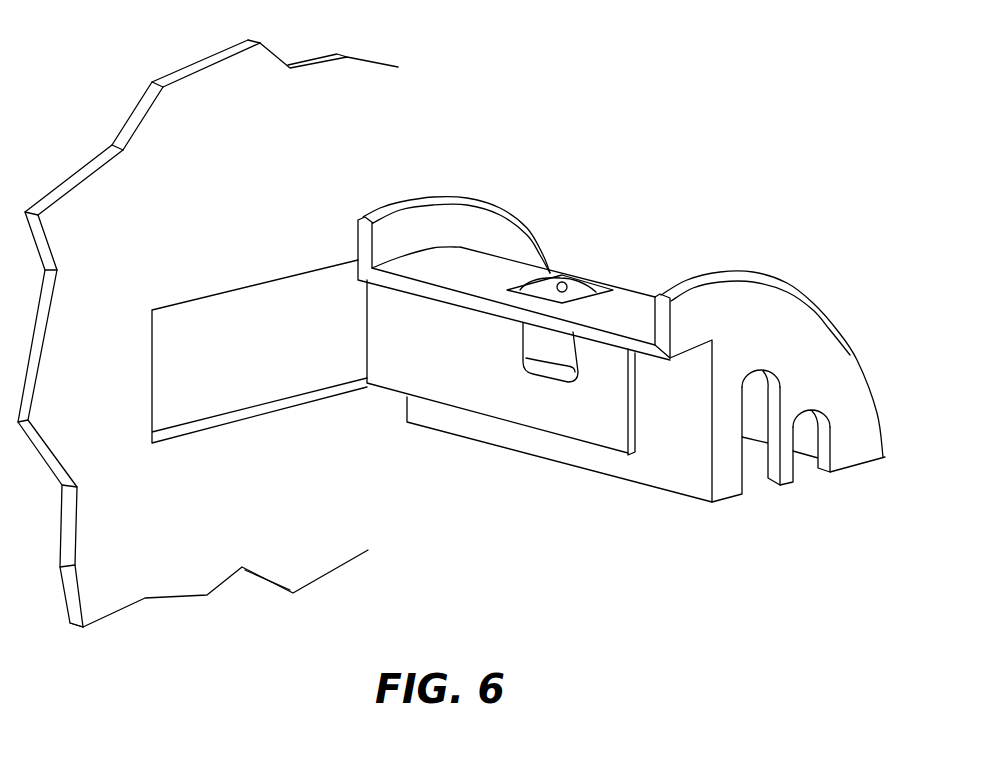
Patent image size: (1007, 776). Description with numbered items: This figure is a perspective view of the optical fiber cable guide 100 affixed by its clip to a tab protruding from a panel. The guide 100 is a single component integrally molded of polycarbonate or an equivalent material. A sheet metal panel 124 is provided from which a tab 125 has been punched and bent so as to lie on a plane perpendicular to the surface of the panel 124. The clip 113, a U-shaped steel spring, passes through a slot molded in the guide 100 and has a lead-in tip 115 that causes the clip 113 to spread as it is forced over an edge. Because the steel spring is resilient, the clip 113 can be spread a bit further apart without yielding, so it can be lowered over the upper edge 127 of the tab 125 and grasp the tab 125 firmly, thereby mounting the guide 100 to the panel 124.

The optical fiber cable guide 100 is at (786, 254).
The clip 113 is at (545, 283).
The lead-in tip 115 is at (542, 378).
The sheet metal panel 124 is at (240, 173).
The tab 125 is at (427, 352).
The upper edge 127 is at (640, 355).